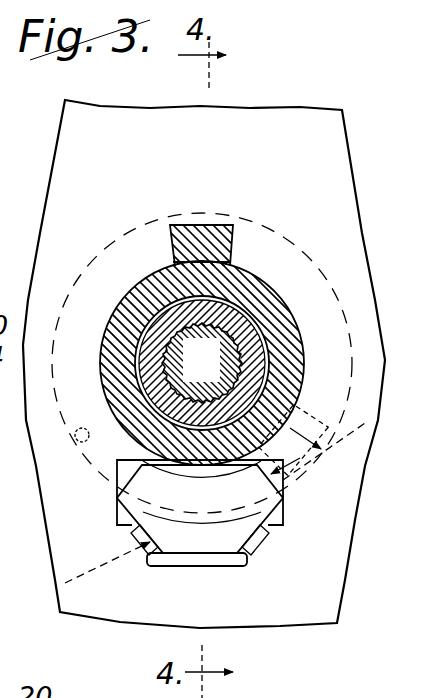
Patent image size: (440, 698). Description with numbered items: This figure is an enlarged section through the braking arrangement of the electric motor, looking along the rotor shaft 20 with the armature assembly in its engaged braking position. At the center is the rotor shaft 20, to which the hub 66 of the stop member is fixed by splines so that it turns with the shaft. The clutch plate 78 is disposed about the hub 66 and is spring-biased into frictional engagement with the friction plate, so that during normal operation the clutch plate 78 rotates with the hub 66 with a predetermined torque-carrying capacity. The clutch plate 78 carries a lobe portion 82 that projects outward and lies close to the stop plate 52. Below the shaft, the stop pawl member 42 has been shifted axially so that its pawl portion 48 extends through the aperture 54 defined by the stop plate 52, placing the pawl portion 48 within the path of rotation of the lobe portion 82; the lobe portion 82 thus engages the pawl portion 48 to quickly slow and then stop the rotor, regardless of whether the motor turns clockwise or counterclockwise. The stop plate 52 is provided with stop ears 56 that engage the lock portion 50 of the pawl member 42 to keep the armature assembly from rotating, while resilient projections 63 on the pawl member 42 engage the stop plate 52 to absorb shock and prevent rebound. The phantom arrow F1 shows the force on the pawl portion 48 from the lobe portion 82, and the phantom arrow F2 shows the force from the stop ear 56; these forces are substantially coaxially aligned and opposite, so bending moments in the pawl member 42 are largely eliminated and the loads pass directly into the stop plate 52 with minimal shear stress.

The rotor shaft 20 is at (215, 378).
The stop pawl member 42 is at (126, 505).
The pawl portion 48 is at (218, 513).
The lock portion 50 is at (212, 539).
The stop plate 52 is at (316, 609).
The aperture 54 is at (172, 564).
The stop ears 56 is at (143, 551).
The projections 63 is at (205, 215).
The hub 66 is at (240, 345).
The clutch plate 78 is at (121, 292).
The lobe portion 82 is at (236, 238).
The force on pawl portion from lobe portion F1 is at (319, 452).
The force on pawl portion from stop ear F2 is at (103, 561).